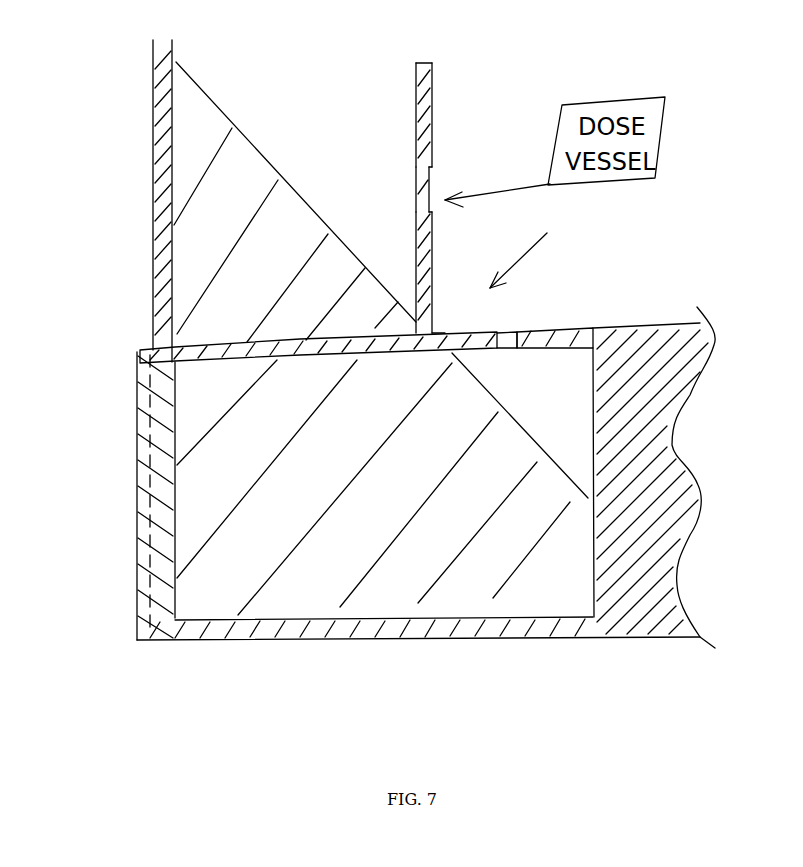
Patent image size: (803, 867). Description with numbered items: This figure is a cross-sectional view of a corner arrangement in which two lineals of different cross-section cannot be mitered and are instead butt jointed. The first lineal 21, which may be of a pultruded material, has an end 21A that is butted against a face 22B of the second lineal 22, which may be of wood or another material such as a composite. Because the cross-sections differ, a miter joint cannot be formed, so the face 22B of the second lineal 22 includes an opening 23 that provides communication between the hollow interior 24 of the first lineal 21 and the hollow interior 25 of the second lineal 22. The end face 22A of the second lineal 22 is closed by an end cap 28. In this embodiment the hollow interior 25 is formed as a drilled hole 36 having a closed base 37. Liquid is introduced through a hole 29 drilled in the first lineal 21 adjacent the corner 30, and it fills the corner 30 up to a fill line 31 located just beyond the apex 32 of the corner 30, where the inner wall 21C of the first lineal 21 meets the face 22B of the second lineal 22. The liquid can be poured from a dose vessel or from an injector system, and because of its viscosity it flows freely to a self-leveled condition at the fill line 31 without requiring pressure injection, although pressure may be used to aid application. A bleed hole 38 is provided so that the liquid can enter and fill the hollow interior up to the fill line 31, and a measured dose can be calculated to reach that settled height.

The first lineal 21 is at (434, 250).
The end of the first lineal 21A is at (152, 337).
The inner wall of the lineal 21C is at (422, 122).
The second lineal 22 is at (545, 322).
The end face of the second lineal 22A is at (155, 370).
The face of the second lineal 22B is at (378, 333).
The opening 23 is at (266, 345).
The hollow interior of the first lineal 24 is at (326, 148).
The hollow interior of the second lineal 25 is at (250, 461).
The end cap 28 is at (140, 522).
The hole 29 is at (438, 190).
The corner 30 is at (541, 252).
The fill line 31 is at (487, 385).
The apex of the corner 32 is at (497, 302).
The drilled hole 36 is at (287, 618).
The closed base 37 is at (592, 573).
The bleed hole 38 is at (500, 331).